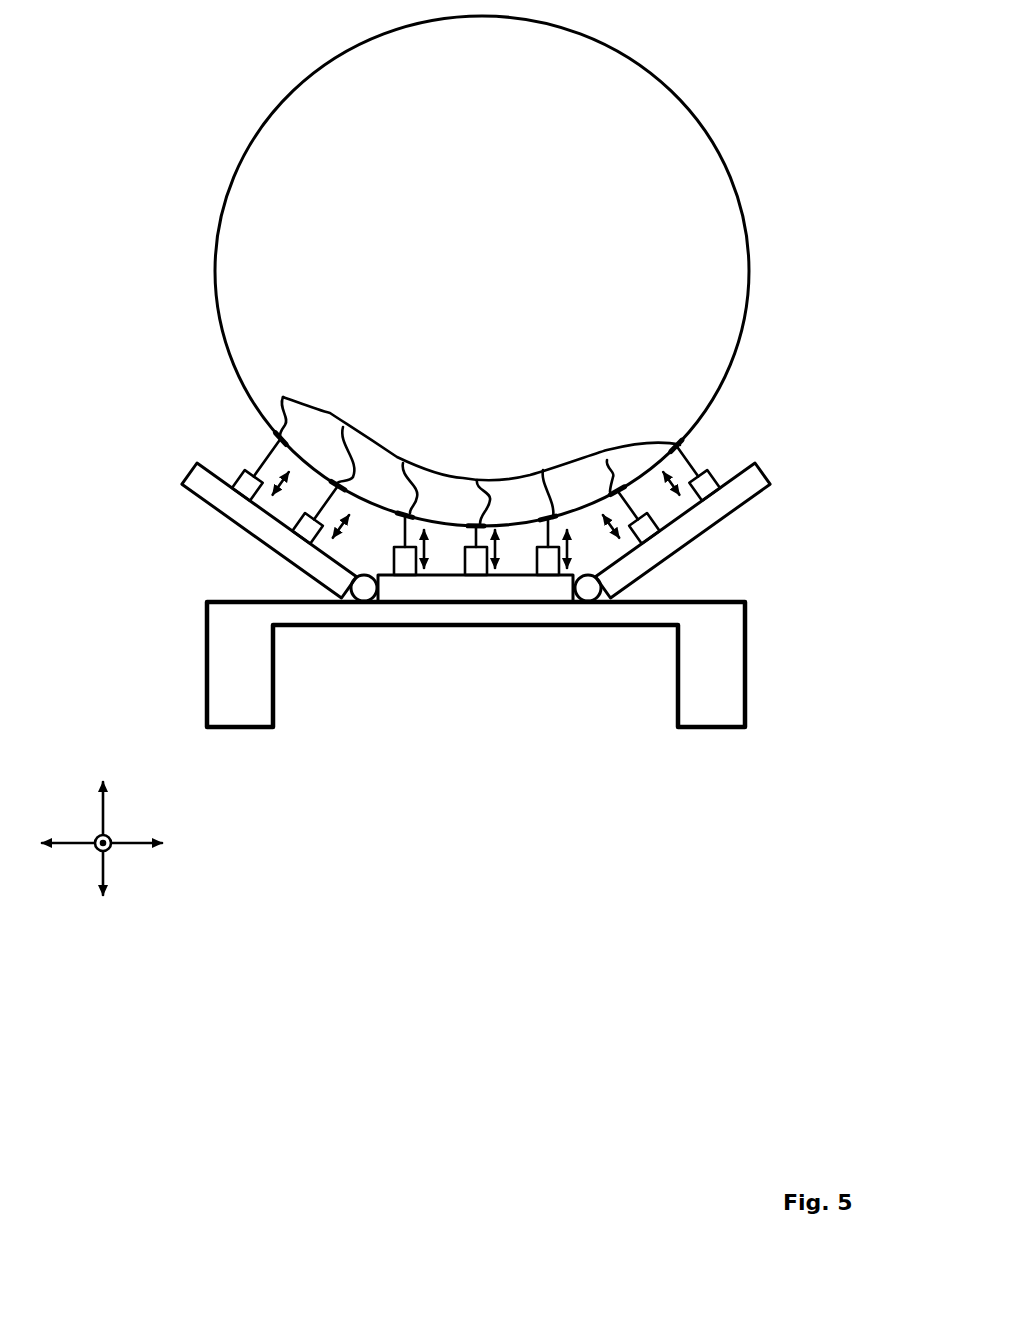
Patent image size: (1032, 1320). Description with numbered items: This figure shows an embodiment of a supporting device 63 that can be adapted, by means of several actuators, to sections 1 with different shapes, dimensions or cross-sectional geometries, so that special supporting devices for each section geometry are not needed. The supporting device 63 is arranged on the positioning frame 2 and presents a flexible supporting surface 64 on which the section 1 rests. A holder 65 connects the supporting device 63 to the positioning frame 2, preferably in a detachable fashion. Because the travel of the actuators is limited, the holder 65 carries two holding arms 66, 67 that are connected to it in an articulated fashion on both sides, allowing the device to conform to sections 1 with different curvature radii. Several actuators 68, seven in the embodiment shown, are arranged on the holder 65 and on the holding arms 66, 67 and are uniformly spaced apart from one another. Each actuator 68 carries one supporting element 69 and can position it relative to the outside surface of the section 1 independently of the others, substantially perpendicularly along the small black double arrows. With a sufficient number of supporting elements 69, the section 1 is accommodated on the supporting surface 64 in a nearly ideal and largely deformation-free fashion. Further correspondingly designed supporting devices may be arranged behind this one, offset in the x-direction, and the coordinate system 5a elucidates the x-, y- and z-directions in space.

The section 1 is at (666, 86).
The positioning frame 2 is at (746, 635).
The coordinate system 5a is at (110, 880).
The supporting device 63 is at (797, 411).
The supporting surface 64 is at (574, 418).
The holder 65 is at (416, 591).
The holding arm 66 is at (203, 488).
The holding arm 67 is at (753, 482).
The actuators 68 is at (393, 552).
The supporting elements 69 is at (283, 397).